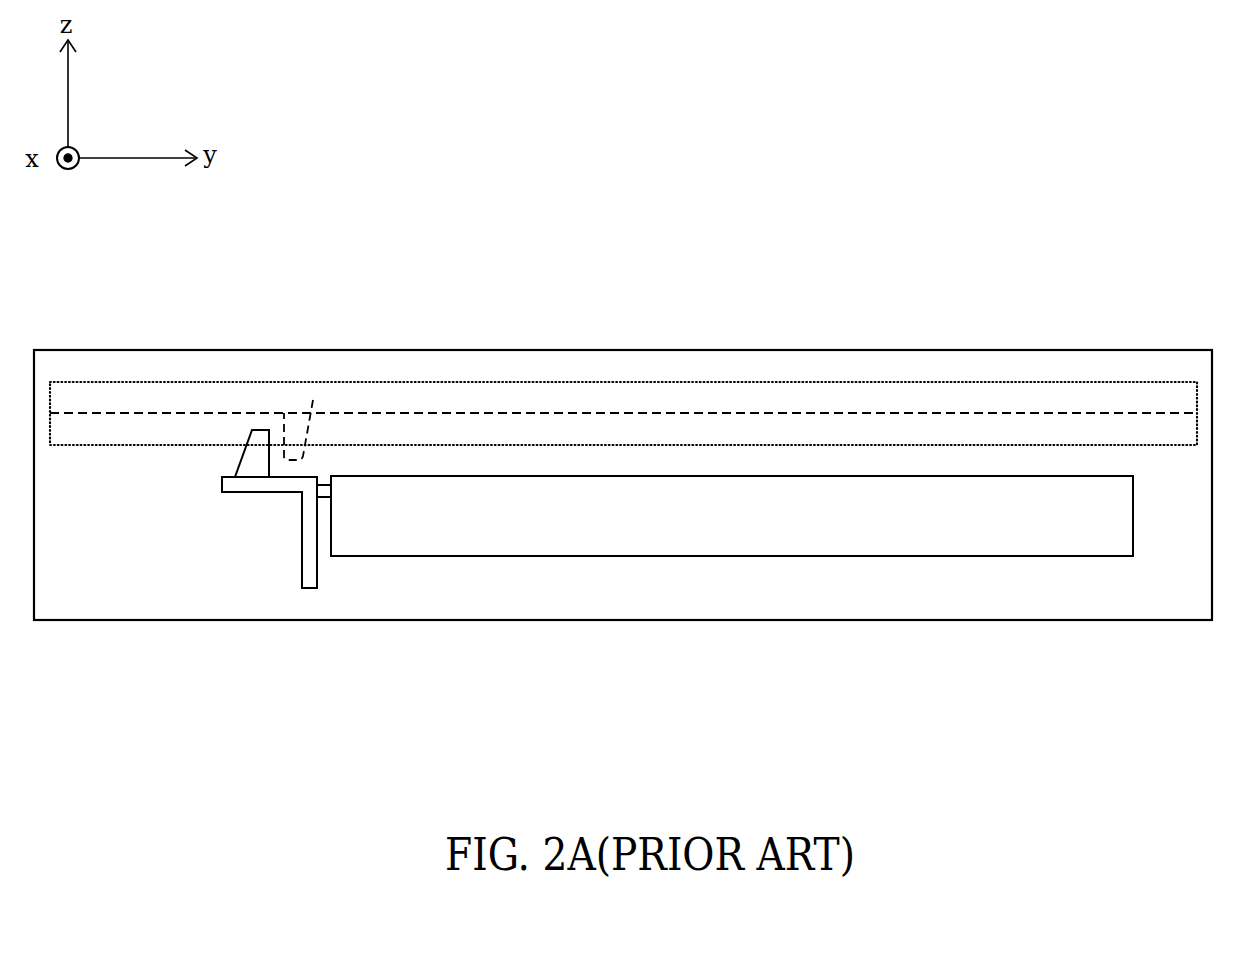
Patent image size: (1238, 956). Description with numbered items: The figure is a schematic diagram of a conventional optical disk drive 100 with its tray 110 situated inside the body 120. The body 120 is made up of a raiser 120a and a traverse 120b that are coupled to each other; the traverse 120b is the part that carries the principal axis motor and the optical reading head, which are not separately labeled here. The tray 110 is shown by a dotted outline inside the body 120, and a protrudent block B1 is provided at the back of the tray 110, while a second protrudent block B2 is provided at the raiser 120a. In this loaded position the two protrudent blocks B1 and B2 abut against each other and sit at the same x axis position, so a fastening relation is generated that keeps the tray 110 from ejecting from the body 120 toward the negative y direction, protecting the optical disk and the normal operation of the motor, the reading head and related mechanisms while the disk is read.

The optical disk drive 100 is at (962, 98).
The tray 110 is at (713, 373).
The body 120 is at (887, 632).
The raiser 120a is at (308, 578).
The traverse 120b is at (730, 535).
The protrudent block B1 is at (313, 400).
The protrudent block B2 is at (255, 465).